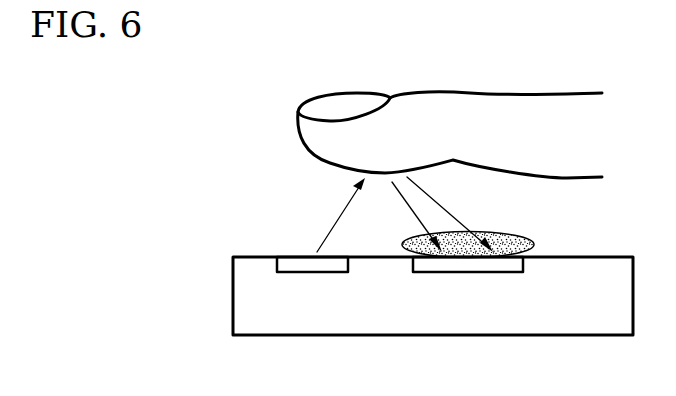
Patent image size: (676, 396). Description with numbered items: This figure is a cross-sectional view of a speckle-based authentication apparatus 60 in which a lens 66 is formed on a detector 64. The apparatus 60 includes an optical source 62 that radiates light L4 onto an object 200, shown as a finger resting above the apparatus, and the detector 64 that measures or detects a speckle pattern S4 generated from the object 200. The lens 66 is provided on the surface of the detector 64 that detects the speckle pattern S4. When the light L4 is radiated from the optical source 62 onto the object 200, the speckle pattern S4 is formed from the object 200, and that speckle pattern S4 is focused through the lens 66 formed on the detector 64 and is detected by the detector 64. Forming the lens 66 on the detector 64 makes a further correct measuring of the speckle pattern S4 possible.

The object 200 is at (432, 102).
The speckle-based authentication apparatus 60 is at (240, 306).
The optical source 62 is at (312, 267).
The detector 64 is at (470, 267).
The lens 66 is at (535, 247).
The light L4 is at (337, 222).
The speckle pattern S4 is at (447, 212).